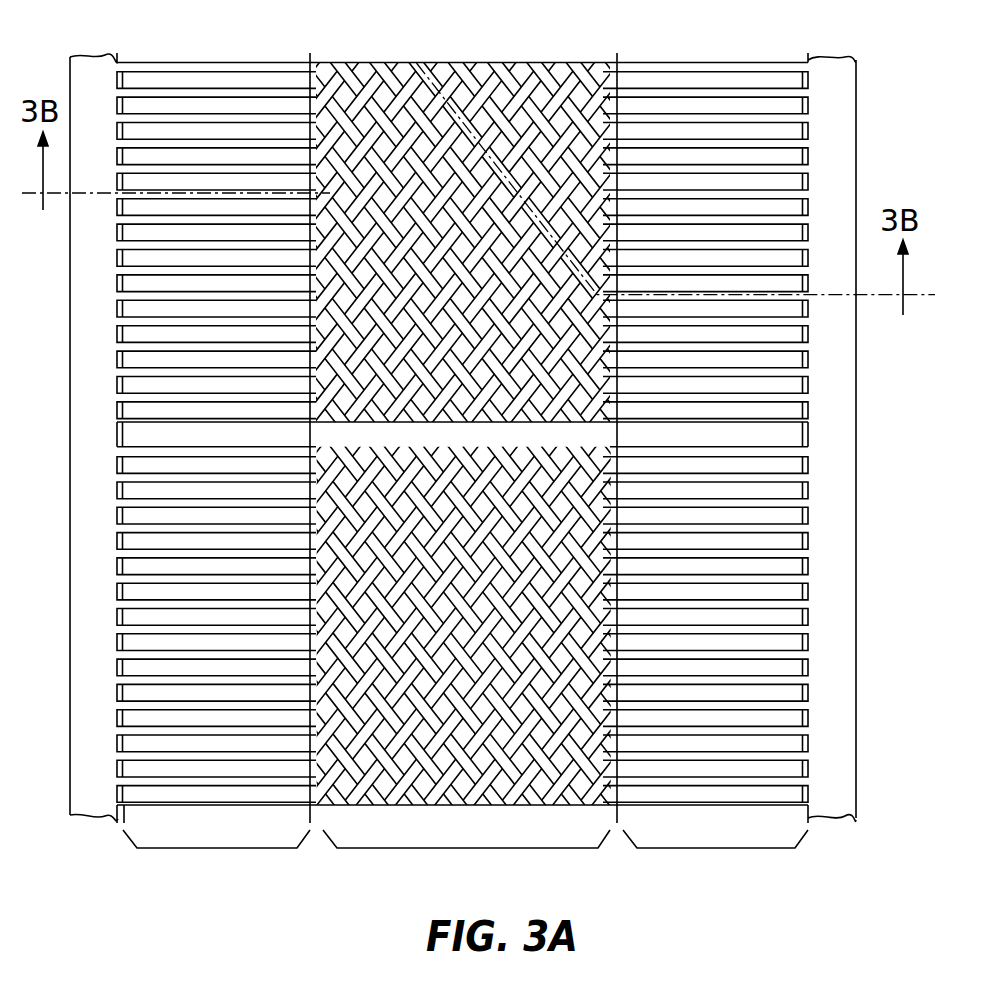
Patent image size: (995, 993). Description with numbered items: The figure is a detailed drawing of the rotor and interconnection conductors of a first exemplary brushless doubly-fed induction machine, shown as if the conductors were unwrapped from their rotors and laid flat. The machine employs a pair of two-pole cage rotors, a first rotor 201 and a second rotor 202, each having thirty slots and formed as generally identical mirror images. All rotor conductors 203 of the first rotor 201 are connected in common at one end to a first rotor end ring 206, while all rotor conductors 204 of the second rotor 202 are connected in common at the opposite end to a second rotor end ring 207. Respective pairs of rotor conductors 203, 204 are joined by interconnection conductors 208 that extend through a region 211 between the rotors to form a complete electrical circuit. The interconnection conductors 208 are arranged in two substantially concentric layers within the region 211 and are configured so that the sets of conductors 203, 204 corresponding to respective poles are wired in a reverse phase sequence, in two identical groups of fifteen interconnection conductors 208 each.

The first rotor 201 is at (215, 848).
The second rotor 202 is at (700, 848).
The rotor conductors 203 is at (205, 68).
The rotor conductors 204 is at (685, 68).
The first rotor end ring 206 is at (98, 52).
The second rotor end ring 207 is at (828, 818).
The interconnection conductors 208 is at (470, 68).
The region 211 is at (462, 848).